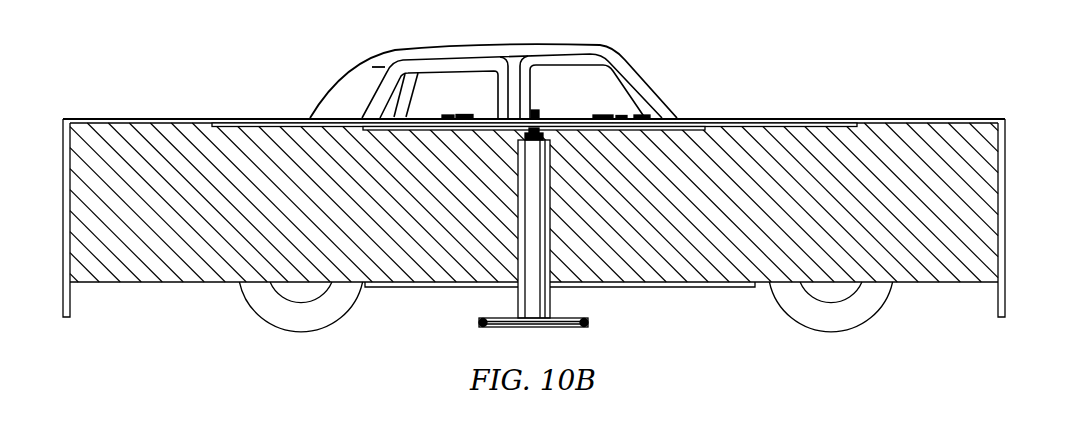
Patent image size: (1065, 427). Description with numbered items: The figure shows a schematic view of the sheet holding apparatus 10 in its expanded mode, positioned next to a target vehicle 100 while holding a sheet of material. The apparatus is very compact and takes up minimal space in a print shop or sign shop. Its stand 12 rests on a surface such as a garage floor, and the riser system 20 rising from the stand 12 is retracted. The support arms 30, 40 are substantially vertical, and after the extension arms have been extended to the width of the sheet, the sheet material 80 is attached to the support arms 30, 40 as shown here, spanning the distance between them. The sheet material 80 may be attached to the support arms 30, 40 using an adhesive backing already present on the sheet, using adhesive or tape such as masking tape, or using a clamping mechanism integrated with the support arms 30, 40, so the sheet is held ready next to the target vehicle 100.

The target vehicle 100 is at (627, 58).
The sheet holding apparatus 10 is at (886, 100).
The support arm 40 is at (63, 202).
The support arm 30 is at (1005, 183).
The sheet material 80 is at (983, 215).
The riser system 20 is at (550, 299).
The stand 12 is at (563, 328).